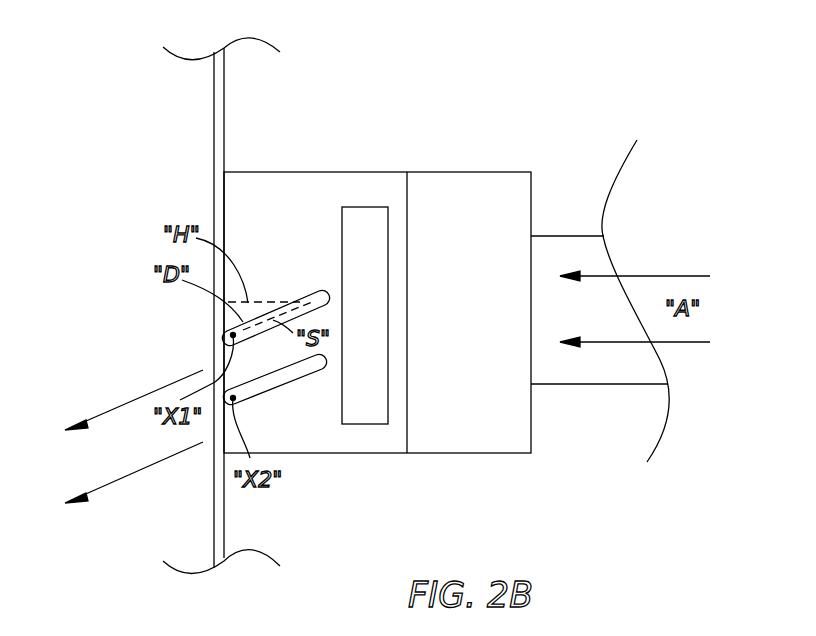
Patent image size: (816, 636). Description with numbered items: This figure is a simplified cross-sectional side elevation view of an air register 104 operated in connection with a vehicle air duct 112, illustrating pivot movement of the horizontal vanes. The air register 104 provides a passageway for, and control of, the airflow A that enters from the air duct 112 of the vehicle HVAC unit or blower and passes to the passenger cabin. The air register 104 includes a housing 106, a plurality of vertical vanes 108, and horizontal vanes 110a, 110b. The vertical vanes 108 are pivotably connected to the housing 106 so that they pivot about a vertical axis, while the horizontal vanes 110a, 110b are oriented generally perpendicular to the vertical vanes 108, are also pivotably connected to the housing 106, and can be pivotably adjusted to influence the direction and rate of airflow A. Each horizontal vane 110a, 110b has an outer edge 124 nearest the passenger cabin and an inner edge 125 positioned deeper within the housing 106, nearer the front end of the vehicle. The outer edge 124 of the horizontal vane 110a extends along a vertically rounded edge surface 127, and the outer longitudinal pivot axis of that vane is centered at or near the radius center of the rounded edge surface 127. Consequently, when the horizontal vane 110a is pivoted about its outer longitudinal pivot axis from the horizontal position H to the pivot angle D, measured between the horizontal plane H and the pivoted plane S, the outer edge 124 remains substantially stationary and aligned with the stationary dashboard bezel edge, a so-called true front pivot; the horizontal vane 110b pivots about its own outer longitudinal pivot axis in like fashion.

The air register 104 is at (403, 266).
The housing 106 is at (330, 172).
The vertical vanes 108 is at (365, 415).
The horizontal vane 110a is at (297, 296).
The horizontal vane 110b is at (280, 390).
The air duct 112 is at (558, 235).
The outer edge 124 is at (223, 350).
The inner edge 125 is at (325, 297).
The rounded edge surface 127 is at (230, 338).